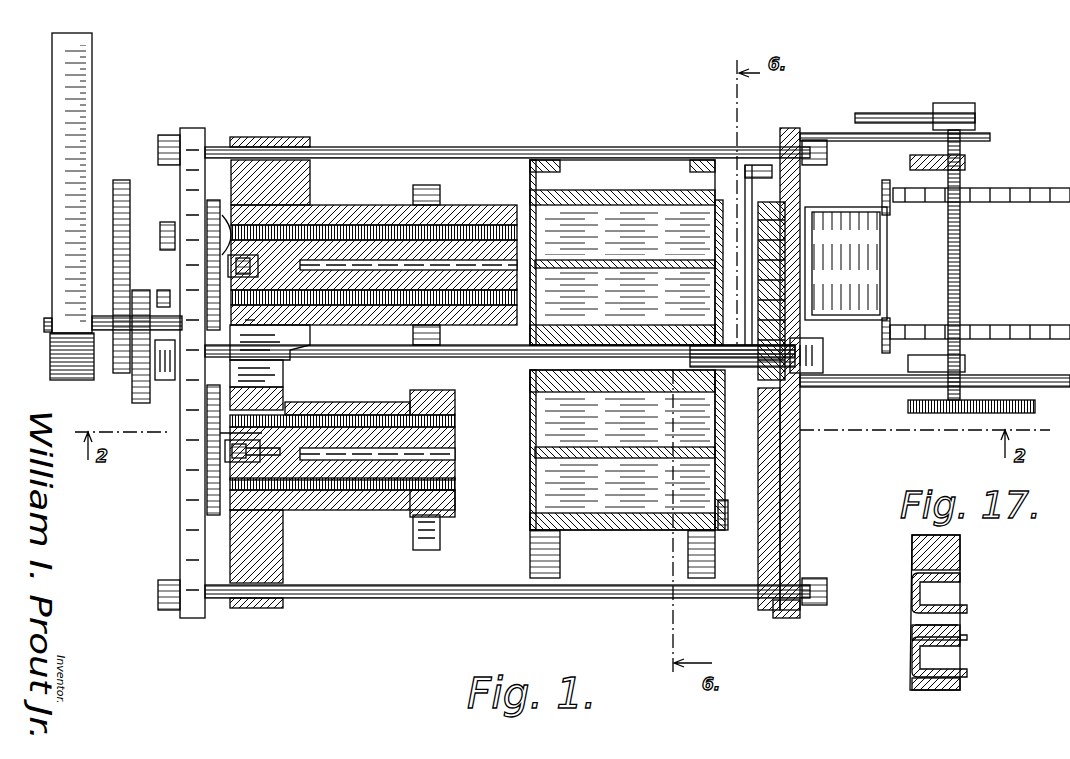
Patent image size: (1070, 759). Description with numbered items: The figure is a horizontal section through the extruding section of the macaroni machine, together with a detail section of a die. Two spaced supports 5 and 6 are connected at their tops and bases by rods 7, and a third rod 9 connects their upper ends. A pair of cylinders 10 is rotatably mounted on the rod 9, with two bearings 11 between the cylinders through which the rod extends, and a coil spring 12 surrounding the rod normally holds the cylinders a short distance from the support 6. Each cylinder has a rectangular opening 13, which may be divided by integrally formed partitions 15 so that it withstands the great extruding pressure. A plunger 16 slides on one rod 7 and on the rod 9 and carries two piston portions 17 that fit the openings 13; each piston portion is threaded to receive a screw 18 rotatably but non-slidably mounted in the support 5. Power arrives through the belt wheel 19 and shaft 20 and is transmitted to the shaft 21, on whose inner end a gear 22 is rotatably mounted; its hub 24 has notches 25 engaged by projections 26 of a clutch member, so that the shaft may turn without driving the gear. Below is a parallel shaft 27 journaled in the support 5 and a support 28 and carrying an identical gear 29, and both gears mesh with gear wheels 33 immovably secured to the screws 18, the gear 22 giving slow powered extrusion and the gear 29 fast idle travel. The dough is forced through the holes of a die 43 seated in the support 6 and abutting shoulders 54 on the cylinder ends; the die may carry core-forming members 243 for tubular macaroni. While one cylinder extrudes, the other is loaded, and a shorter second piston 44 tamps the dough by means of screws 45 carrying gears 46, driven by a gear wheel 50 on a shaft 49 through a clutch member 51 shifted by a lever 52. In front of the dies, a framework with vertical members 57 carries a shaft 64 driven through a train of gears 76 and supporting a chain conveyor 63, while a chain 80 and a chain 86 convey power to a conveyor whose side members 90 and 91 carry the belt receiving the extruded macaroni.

In FIG. 1, the disc 19 is at (65, 193).
In FIG. 1, the shaft 20 is at (112, 330).
In FIG. 1, the shaft 21 is at (146, 272).
In FIG. 1, the gear 22 is at (205, 238).
In FIG. 1, the notches 25 is at (207, 255).
In FIG. 1, the support 5 is at (180, 540).
In FIG. 1, the gear wheels 33 is at (214, 268).
In FIG. 1, the gear 29 is at (235, 215).
In FIG. 1, the gears 46 is at (213, 457).
In FIG. 1, the rods 7 is at (412, 148).
In FIG. 1, the plunger 16 is at (300, 196).
In FIG. 1, the screws 18 is at (385, 226).
In FIG. 1, the piston portions 17 is at (465, 215).
In FIG. 1, the shaft 27 is at (283, 255).
In FIG. 1, the projections 26 is at (270, 341).
In FIG. 1, the hub 24 is at (252, 312).
In FIG. 1, the rod 9 is at (520, 360).
In FIG. 1, the side member 91 is at (823, 333).
In FIG. 1, the screws 45 is at (330, 406).
In FIG. 1, the piston 44 is at (368, 500).
In FIG. 1, the shaft 49 is at (275, 492).
In FIG. 1, the support 28 is at (440, 535).
In FIG. 1, the lever 52 is at (210, 433).
In FIG. 1, the gear wheel 50 is at (225, 450).
In FIG. 1, the clutch member 51 is at (230, 462).
In FIG. 1, the cylinders 10 is at (530, 225).
In FIG. 1, the rectangular openings 13 is at (627, 359).
In FIG. 1, the partitions 15 is at (608, 262).
In FIG. 1, the bearings 11 is at (725, 388).
In FIG. 1, the support 6 is at (800, 516).
In FIG. 1, the coil spring 12 is at (795, 396).
In FIG. 1, the die 43 is at (785, 232).
In FIG. 17, the die 43 is at (912, 546).
In FIG. 1, the shoulders 54 is at (736, 208).
In FIG. 1, the rod 80 is at (832, 134).
In FIG. 1, the chain 86 is at (884, 115).
In FIG. 1, the chain conveyor 63 is at (1020, 200).
In FIG. 1, the side member 90 is at (860, 206).
In FIG. 1, the shaft 64 is at (962, 271).
In FIG. 1, the vertical members 57 is at (908, 363).
In FIG. 1, the train of gears 76 is at (1000, 418).
In FIG. 17, the core-forming members 243 is at (963, 577).